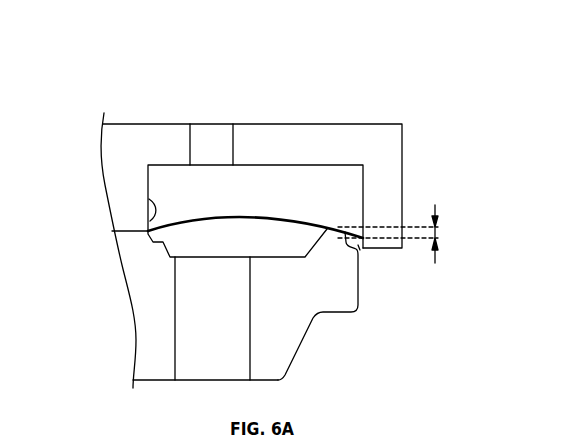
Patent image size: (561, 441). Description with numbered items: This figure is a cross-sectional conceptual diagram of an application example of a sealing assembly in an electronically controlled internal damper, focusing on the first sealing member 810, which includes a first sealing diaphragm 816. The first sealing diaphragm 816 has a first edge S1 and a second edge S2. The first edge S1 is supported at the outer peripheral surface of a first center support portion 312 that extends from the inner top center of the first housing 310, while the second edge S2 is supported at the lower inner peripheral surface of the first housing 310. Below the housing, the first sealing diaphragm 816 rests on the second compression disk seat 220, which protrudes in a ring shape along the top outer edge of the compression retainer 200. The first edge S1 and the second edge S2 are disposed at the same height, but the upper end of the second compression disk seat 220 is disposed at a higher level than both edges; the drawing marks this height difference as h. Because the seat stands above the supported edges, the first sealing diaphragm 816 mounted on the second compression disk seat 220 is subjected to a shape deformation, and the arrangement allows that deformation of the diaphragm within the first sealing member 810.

The first sealing member 810 is at (297, 66).
The first housing 310 is at (393, 152).
The first center support portion 312 is at (142, 180).
The first sealing diaphragm 816 is at (268, 215).
The second compression disk seat 220 is at (318, 239).
The compression retainer 200 is at (305, 327).
The first edge S1 is at (149, 199).
The second edge S2 is at (360, 250).
The height difference h is at (396, 234).